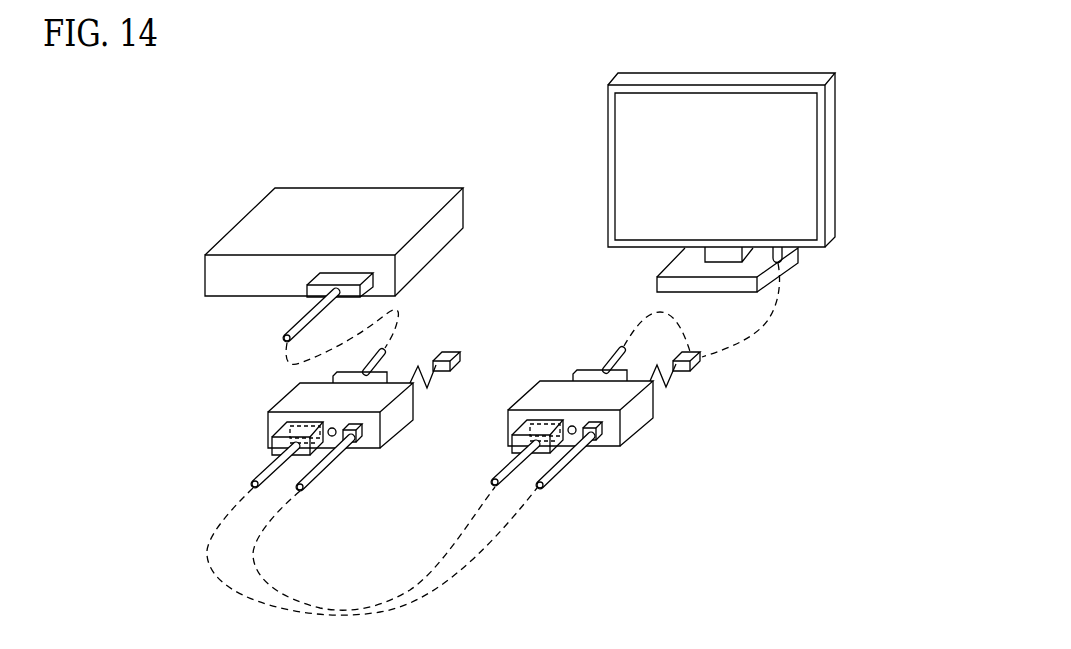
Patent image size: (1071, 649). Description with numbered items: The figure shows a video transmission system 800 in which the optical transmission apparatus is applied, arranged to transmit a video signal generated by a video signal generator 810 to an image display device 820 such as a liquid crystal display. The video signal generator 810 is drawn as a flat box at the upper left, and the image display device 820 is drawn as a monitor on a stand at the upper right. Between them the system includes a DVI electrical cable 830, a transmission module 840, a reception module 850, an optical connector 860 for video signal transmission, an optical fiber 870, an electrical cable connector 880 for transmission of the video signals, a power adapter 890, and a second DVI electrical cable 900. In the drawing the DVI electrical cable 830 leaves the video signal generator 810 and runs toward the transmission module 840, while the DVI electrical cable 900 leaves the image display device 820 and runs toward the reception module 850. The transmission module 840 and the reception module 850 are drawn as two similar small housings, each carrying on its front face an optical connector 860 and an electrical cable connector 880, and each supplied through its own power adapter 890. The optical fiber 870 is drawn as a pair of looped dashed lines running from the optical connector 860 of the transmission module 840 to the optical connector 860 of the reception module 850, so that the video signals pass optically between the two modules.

The video transmission system 800 is at (243, 43).
The video signal generator 810 is at (282, 188).
The image display device 820 is at (660, 78).
The DVI electrical cable 830 is at (400, 310).
The transmission module 840 is at (397, 418).
The reception module 850 is at (632, 427).
The optical connector port 860 is at (272, 447).
The optical fiber 870 is at (207, 552).
The electrical cable connector 880 is at (365, 440).
The power adapter 890 is at (460, 353).
The DVI electrical cable 900 is at (772, 312).